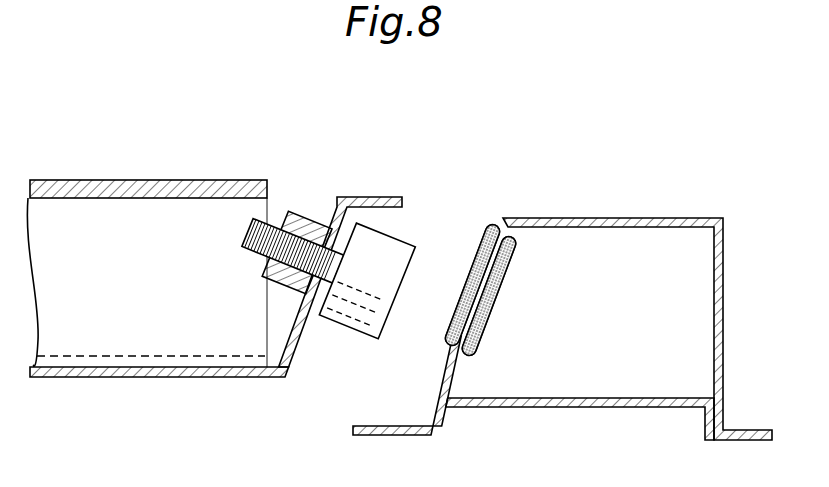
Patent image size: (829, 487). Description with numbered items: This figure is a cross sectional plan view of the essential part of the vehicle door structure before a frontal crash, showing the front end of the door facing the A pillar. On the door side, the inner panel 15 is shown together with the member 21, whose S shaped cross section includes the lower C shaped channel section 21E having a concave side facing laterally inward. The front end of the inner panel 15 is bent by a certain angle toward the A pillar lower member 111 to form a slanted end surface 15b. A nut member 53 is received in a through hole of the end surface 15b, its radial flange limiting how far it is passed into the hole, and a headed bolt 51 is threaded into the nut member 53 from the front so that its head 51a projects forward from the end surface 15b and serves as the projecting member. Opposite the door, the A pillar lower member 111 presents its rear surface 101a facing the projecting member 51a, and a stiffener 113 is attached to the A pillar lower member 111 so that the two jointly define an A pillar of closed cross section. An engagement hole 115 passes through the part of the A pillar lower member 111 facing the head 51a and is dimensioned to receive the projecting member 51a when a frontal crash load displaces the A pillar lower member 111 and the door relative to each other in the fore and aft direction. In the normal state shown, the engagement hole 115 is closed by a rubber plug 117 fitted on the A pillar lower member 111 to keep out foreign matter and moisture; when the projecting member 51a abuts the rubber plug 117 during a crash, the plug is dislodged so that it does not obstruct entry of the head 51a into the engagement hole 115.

The duct 21 is at (219, 167).
The lower C shaped channel section 21E is at (93, 215).
The inner panel 15 is at (210, 372).
The slanted end surface 15b is at (292, 358).
The nut member 53 is at (306, 205).
The head of headed bolt 51a is at (402, 253).
The headed bolt 51 is at (351, 301).
The inclined wall of housing 101a is at (450, 383).
The stiffener 113 is at (648, 403).
The A pillar lower member 111 is at (718, 262).
The engagement hole 115 is at (510, 250).
The rubber plug 117 is at (487, 307).